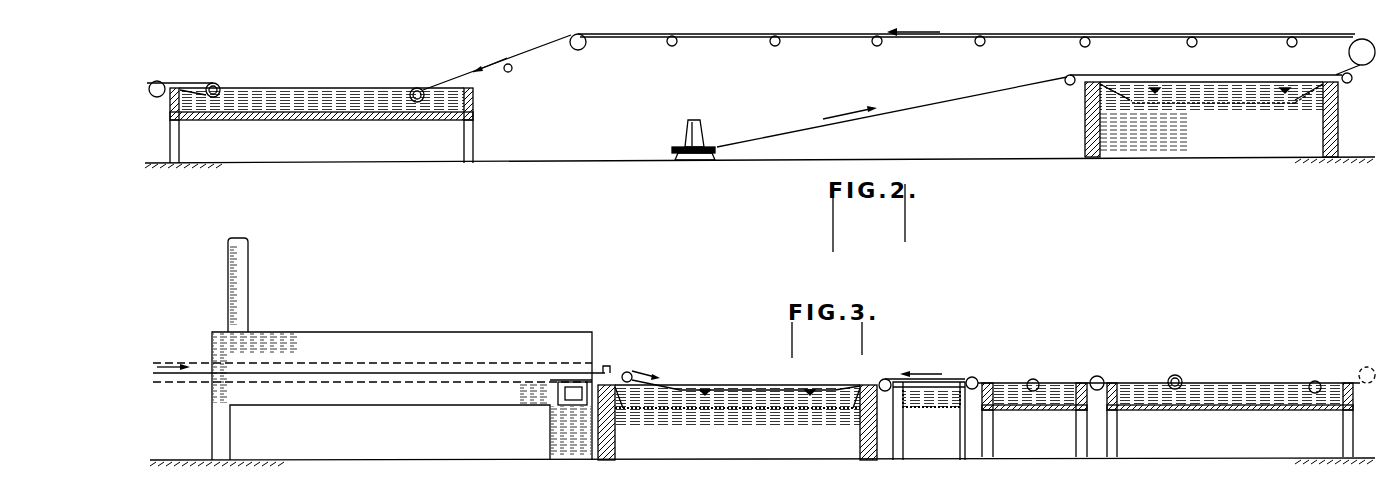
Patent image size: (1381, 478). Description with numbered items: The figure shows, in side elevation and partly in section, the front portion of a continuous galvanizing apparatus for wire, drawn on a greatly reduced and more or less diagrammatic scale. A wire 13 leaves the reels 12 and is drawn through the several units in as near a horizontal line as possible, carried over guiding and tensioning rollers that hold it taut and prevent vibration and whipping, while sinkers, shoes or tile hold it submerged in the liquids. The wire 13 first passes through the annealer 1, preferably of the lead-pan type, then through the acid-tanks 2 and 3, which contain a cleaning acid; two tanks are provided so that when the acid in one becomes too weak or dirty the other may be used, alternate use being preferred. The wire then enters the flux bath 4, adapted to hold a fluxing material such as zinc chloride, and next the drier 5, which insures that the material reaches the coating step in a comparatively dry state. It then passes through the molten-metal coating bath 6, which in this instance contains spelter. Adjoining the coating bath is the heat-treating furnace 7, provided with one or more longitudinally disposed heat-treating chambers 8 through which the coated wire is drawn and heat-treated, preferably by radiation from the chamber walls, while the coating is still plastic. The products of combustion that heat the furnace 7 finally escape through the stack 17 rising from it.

In FIG. 2, the annealer 1 is at (1211, 119).
In FIG. 2, the acid-tank 2 is at (359, 99).
In FIG. 3, the acid-tank 3 is at (1230, 416).
In FIG. 3, the flux bath 4 is at (1034, 418).
In FIG. 3, the drier 5 is at (929, 421).
In FIG. 3, the molten-metal coating bath 6 is at (737, 420).
In FIG. 3, the heat-treating furnace 7 is at (402, 396).
In FIG. 3, the heat-treating chamber 8 is at (412, 370).
In FIG. 2, the reel 12 is at (705, 125).
In FIG. 2, the wire 13 is at (968, 97).
In FIG. 3, the wire 13 is at (956, 381).
In FIG. 3, the stack 17 is at (246, 290).